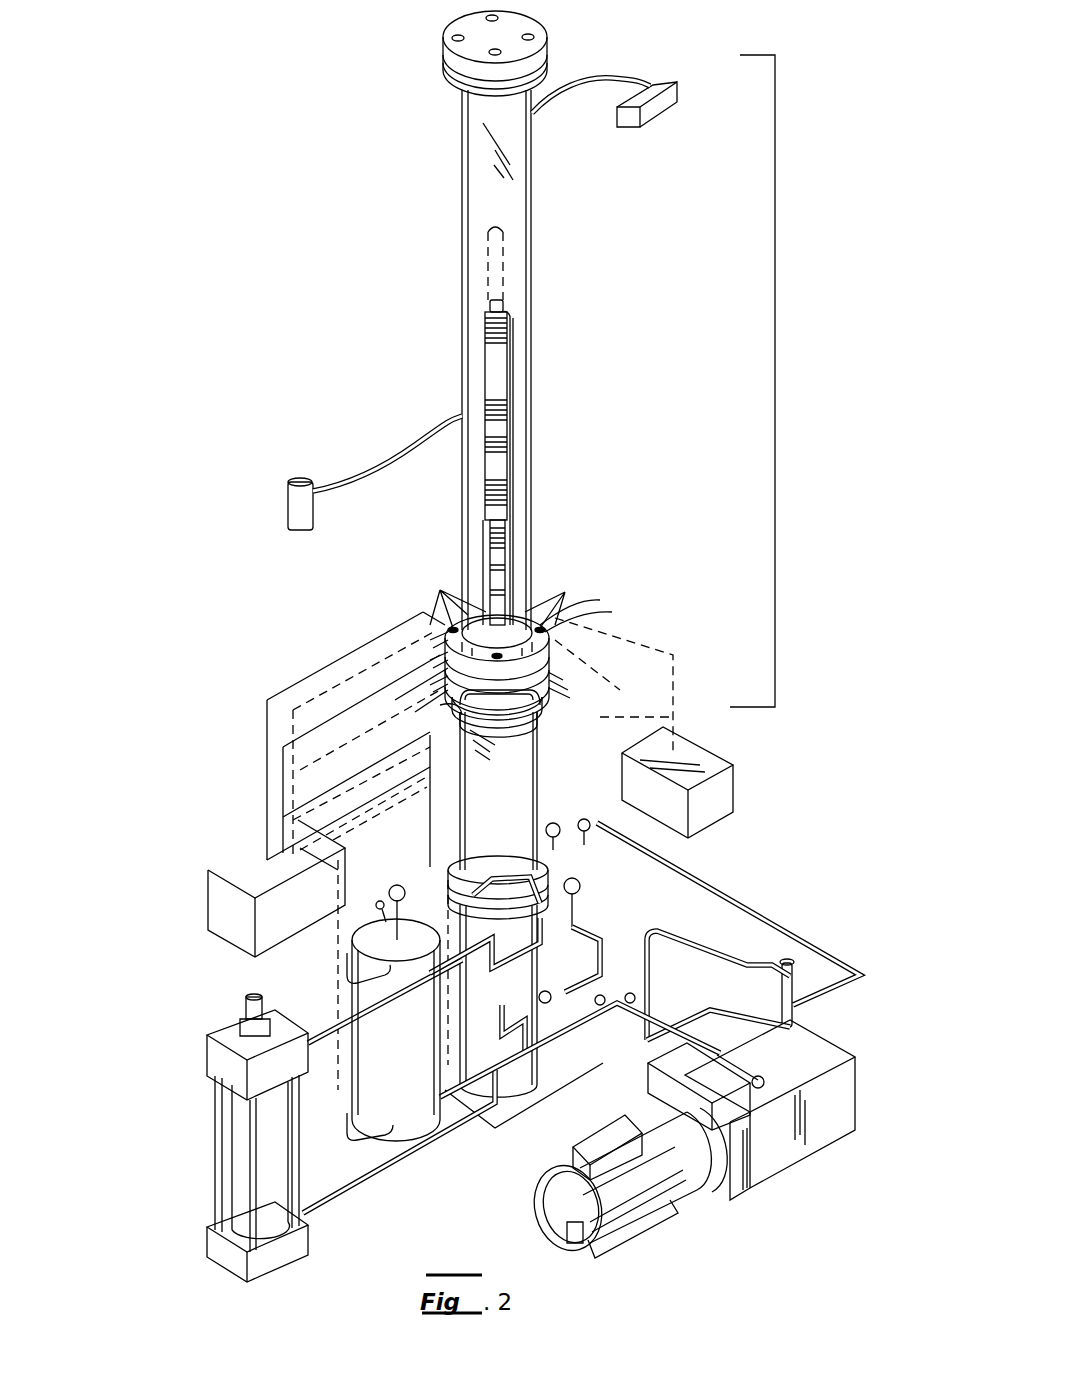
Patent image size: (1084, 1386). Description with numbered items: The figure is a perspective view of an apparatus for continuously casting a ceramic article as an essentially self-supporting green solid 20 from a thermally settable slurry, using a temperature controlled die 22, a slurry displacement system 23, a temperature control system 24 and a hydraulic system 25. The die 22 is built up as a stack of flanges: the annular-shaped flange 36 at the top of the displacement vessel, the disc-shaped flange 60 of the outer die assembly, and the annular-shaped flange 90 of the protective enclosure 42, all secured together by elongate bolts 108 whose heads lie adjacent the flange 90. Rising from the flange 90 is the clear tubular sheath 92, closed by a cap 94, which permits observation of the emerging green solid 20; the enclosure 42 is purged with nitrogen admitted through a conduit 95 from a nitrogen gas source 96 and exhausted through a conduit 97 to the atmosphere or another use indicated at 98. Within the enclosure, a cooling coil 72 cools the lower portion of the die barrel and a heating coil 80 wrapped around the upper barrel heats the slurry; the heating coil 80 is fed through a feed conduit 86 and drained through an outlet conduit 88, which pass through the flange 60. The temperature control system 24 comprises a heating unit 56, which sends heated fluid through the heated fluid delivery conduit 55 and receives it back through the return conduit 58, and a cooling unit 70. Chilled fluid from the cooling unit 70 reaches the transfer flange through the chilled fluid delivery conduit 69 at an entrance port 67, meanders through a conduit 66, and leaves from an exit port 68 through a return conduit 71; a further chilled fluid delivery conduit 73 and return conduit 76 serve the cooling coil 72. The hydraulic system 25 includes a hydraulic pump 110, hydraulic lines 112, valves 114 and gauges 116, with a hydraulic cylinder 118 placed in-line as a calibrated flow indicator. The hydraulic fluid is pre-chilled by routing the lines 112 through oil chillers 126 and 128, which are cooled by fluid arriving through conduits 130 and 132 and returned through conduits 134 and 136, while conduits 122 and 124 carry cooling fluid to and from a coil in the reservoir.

The green solid 20 is at (503, 237).
The temperature controlled die 22 is at (776, 385).
The slurry displacement system 23 is at (545, 793).
The temperature control system 24 is at (252, 795).
The hydraulic system 25 is at (805, 1158).
The annular-shaped flange 36 is at (538, 730).
The protective enclosure 42 is at (532, 512).
The heated fluid delivery conduit 55 is at (432, 712).
The heating unit 56 is at (735, 778).
The return conduit 58 is at (610, 616).
The disc-shaped flange 60 is at (551, 656).
The conduit 66 is at (545, 712).
The entrance port 67 is at (430, 700).
The exit port 68 is at (400, 632).
The chilled fluid delivery conduit 69 is at (305, 728).
The cooling unit 70 is at (252, 862).
The return conduit 71 is at (320, 690).
The cooling coil 72 is at (505, 540).
The chilled fluid delivery conduit 73 is at (440, 632).
The return conduit 76 is at (560, 700).
The heating coil 80 is at (507, 343).
The feed conduit 86 is at (491, 750).
The outlet conduit 88 is at (586, 608).
The annular-shaped flange 90 is at (525, 636).
The tubular sheath 92 is at (531, 300).
The cap 94 is at (490, 33).
The conduit 95 is at (388, 452).
The nitrogen gas source 96 is at (298, 478).
The conduit 97 is at (565, 105).
The exhaust destination 98 is at (677, 88).
The elongate bolts 108 is at (513, 611).
The hydraulic pump 110 is at (670, 1208).
The hydraulic lines 112 is at (825, 940).
The valves 114 is at (597, 830).
The gauges 116 is at (546, 833).
The hydraulic cylinder 118 is at (240, 1148).
The conduit 122 is at (362, 778).
The conduit 124 is at (448, 872).
The oil chiller 126 is at (380, 1080).
The oil chiller 128 is at (462, 1036).
The conduit 130 is at (380, 785).
The conduit 132 is at (338, 900).
The conduit 134 is at (362, 1068).
The conduit 136 is at (435, 1010).